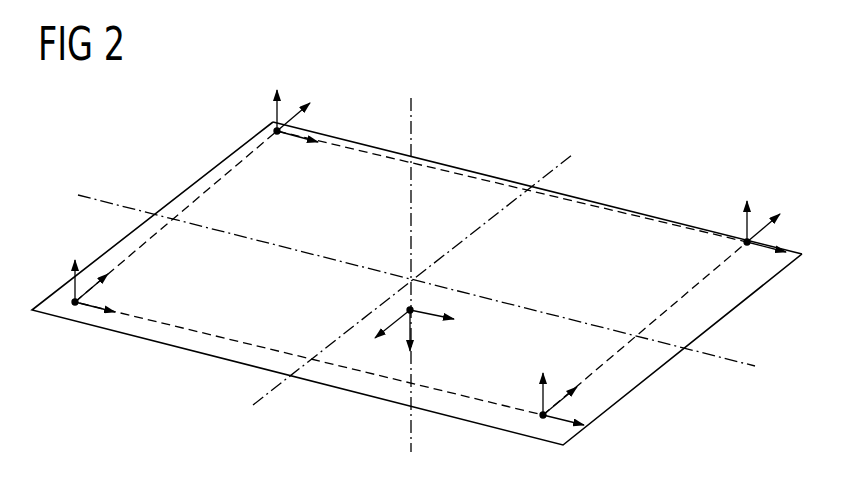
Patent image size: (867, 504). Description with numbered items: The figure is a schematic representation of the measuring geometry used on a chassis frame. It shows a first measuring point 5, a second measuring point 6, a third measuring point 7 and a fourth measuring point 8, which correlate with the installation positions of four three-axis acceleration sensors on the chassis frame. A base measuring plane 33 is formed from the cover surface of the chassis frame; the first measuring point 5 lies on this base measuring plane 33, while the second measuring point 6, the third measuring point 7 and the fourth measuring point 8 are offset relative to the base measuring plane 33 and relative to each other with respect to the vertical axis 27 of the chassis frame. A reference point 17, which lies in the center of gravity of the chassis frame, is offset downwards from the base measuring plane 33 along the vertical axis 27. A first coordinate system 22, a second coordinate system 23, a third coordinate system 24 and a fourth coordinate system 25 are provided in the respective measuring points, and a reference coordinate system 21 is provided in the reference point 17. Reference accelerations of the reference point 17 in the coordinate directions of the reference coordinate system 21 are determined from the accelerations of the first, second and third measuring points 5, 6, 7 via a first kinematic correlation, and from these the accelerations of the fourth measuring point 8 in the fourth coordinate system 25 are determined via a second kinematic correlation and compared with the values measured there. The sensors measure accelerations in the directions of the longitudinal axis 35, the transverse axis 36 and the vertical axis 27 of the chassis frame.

The first measuring point 5 is at (70, 308).
The second measuring point 6 is at (535, 418).
The third measuring point 7 is at (274, 129).
The fourth measuring point 8 is at (743, 246).
The reference point 17 is at (407, 310).
The reference coordinate system 21 is at (413, 327).
The first coordinate system 22 is at (90, 307).
The second coordinate system 23 is at (557, 417).
The third coordinate system 24 is at (300, 104).
The fourth coordinate system 25 is at (745, 232).
The vertical axis 27 is at (413, 113).
The base measuring plane 33 is at (592, 207).
The longitudinal axis 35 is at (736, 366).
The transverse axis 36 is at (268, 393).